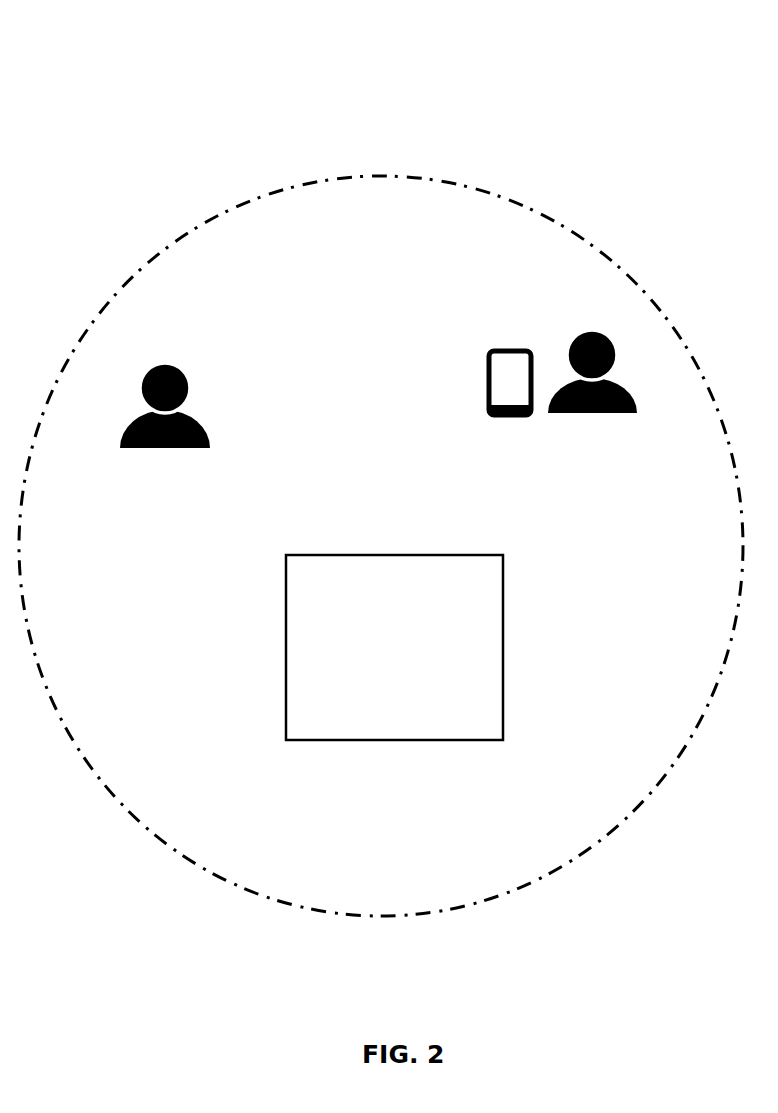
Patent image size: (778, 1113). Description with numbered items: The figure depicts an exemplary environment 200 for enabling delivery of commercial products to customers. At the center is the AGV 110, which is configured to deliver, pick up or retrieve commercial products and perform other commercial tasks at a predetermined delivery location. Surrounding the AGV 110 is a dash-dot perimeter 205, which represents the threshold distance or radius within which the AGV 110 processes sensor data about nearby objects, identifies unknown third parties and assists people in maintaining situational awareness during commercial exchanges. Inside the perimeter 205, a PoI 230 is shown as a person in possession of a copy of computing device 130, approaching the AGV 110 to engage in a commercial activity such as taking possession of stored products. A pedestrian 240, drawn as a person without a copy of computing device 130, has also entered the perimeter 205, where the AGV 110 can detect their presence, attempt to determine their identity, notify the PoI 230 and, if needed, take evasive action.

The exemplary environment 200 is at (575, 116).
The perimeter 205 is at (372, 917).
The AGV 110 is at (484, 720).
The computing device 130 is at (487, 372).
The PoI 230 is at (585, 329).
The pedestrian 240 is at (121, 423).